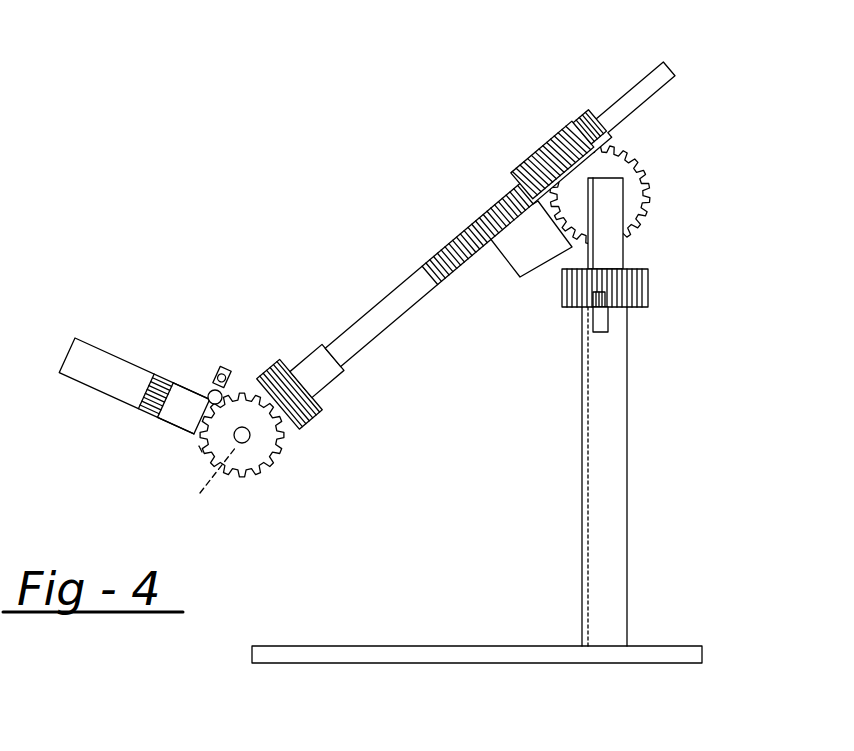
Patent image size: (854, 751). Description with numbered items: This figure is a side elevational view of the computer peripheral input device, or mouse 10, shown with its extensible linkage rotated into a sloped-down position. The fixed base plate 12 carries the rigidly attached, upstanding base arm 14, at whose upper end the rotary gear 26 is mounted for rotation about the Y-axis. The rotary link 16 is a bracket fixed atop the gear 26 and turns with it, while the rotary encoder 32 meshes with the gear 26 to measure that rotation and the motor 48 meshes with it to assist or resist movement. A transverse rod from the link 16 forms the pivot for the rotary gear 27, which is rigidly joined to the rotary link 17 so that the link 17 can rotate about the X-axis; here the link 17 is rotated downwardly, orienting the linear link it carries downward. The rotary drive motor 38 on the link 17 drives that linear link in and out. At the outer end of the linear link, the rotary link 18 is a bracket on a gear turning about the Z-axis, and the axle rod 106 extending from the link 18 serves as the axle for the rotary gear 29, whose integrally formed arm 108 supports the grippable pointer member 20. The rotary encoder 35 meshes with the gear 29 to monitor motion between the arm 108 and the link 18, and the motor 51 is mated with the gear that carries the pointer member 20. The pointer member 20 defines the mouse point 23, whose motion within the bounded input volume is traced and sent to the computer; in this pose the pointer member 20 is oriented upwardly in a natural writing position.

The mouse 10 is at (245, 238).
The base plate 12 is at (658, 650).
The base arm 14 is at (612, 463).
The rotary link 16 is at (617, 237).
The rotary link 17 is at (520, 257).
The rotary link 18 is at (278, 417).
The grippable pointer member 20 is at (134, 349).
The mouse point 23 is at (201, 485).
The rotary gear 26 is at (643, 290).
The rotary gear 27 is at (637, 202).
The rotary gear 29 is at (197, 448).
The rotary encoder 32 is at (595, 317).
The rotary encoder 35 is at (222, 375).
The rotary drive motor 38 is at (579, 114).
The motor 48 is at (607, 327).
The motor 51 is at (207, 387).
The axle rod 106 is at (244, 446).
The arm 108 is at (175, 417).